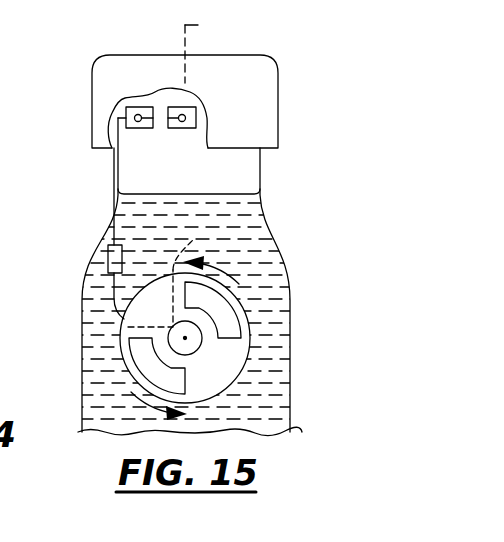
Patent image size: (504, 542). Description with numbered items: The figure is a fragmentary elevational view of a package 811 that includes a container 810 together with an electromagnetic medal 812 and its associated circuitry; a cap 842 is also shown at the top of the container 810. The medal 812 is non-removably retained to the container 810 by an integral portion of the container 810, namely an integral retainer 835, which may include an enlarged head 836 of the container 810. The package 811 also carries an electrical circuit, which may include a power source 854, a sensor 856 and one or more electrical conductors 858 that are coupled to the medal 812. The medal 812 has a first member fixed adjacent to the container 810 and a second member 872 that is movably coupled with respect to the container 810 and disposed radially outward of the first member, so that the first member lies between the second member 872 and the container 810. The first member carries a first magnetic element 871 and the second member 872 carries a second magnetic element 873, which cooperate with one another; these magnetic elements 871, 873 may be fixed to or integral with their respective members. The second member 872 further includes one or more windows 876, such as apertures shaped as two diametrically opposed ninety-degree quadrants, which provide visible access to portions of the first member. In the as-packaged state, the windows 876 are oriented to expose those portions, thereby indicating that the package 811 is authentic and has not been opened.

The container 810 is at (62, 367).
The package 811 is at (80, 25).
The electromagnetic medal 812 is at (270, 360).
The cap 842 is at (303, 58).
The power source 854 is at (92, 250).
The sensor 856 is at (165, 148).
The electrical conductors 858 is at (107, 283).
The first magnetic element 871 is at (127, 327).
The second magnetic element 873 is at (204, 243).
The windows 876 is at (217, 292).
The enlarged head 836 is at (188, 338).
The integral retainer 835 is at (212, 358).
The second member 872 is at (225, 390).